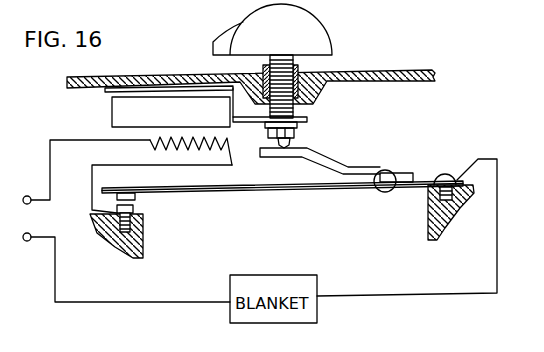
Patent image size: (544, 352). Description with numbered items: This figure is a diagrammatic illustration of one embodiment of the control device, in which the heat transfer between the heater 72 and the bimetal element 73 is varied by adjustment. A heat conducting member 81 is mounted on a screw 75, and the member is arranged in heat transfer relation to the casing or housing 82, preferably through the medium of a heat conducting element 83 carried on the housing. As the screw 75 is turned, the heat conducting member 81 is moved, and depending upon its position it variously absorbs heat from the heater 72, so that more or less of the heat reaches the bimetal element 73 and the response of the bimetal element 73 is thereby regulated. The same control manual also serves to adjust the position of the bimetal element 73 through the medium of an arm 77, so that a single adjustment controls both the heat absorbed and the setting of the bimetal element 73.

The heater 72 is at (200, 149).
The bimetal element 73 is at (268, 190).
The screw 75 is at (291, 83).
The arm 77 is at (332, 166).
The heat conducting member 81 is at (155, 108).
The casing or housing 82 is at (400, 83).
The heat conducting element 83 is at (105, 91).